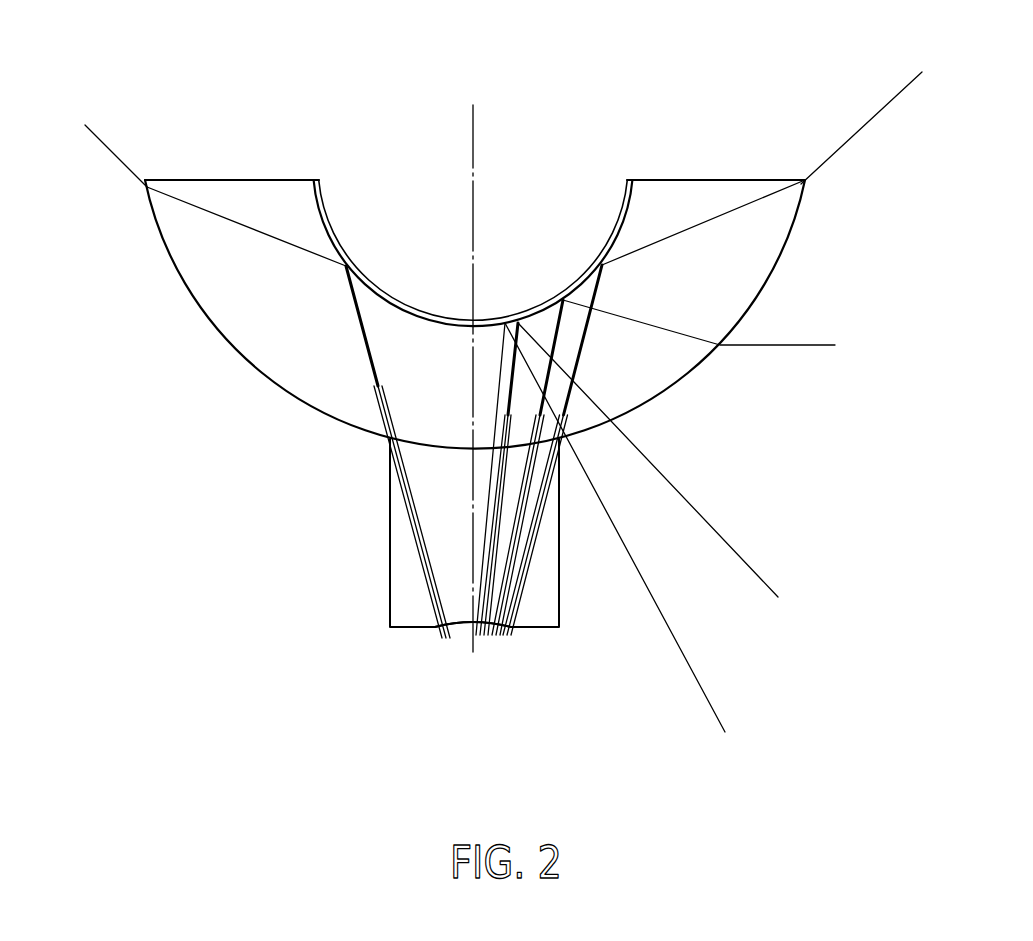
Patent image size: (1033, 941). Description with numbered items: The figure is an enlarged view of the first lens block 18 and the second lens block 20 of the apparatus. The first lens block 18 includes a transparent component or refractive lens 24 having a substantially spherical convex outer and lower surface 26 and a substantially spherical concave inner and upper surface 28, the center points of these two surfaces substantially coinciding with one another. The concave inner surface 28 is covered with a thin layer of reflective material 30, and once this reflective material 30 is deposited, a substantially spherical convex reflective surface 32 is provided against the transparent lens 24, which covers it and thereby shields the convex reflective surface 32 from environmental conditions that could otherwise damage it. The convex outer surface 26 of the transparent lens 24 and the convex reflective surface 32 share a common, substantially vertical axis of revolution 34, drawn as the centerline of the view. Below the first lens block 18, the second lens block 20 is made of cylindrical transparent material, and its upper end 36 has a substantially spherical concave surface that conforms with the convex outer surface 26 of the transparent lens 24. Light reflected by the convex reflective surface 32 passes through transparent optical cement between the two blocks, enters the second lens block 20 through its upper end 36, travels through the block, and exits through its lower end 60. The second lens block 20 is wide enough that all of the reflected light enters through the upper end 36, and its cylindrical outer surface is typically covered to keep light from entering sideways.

The first lens block 18 is at (503, 260).
The second lens block 20 is at (499, 561).
The transparent lens 24 is at (694, 303).
The convex outer surface 26 is at (677, 383).
The concave inner surface 28 is at (630, 235).
The reflective material 30 is at (576, 283).
The convex reflective surface 32 is at (632, 214).
The axis of revolution 34 is at (474, 142).
The upper end 36 is at (422, 441).
The lower end 60 is at (413, 628).